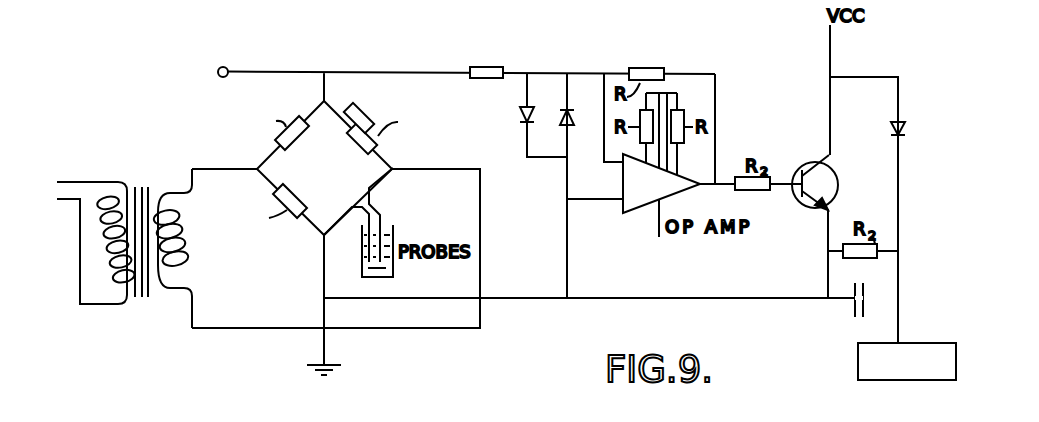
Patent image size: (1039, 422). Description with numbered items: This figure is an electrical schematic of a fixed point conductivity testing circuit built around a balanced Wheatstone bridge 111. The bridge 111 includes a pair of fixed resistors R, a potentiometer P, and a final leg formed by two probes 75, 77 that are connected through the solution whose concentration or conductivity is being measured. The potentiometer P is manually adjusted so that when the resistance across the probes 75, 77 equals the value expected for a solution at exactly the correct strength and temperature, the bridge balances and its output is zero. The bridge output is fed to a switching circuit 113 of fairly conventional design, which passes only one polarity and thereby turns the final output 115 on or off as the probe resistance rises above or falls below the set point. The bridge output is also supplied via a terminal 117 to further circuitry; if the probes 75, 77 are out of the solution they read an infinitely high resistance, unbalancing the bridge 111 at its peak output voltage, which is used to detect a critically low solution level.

The terminal 117 is at (227, 66).
The switching circuit 113 is at (536, 48).
The Wheatstone bridge 111 is at (262, 152).
The probe 75 is at (361, 221).
The probe 77 is at (385, 228).
The output 115 is at (857, 360).